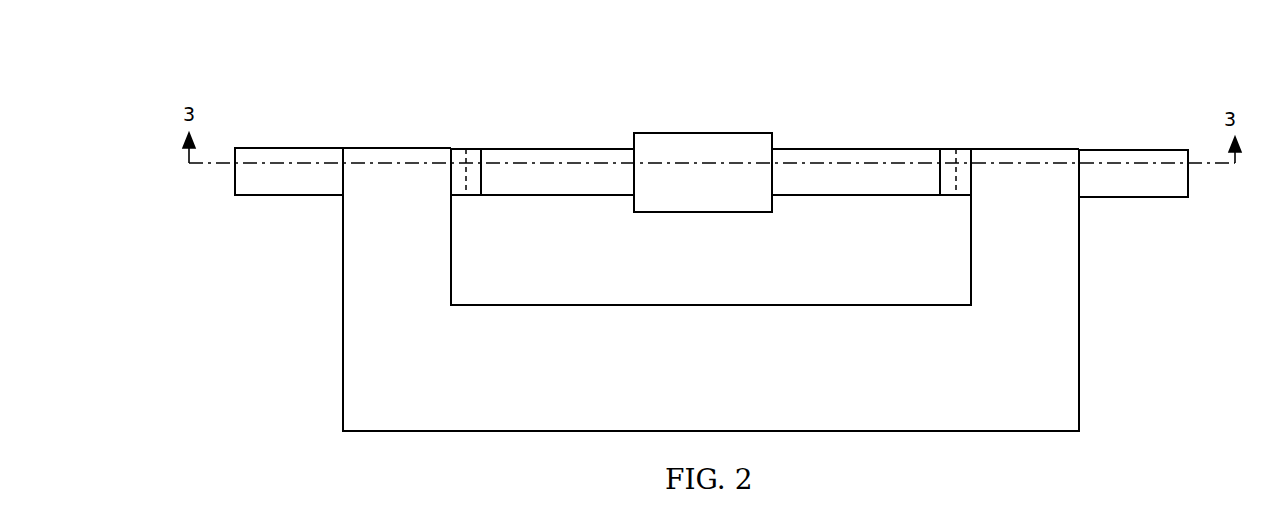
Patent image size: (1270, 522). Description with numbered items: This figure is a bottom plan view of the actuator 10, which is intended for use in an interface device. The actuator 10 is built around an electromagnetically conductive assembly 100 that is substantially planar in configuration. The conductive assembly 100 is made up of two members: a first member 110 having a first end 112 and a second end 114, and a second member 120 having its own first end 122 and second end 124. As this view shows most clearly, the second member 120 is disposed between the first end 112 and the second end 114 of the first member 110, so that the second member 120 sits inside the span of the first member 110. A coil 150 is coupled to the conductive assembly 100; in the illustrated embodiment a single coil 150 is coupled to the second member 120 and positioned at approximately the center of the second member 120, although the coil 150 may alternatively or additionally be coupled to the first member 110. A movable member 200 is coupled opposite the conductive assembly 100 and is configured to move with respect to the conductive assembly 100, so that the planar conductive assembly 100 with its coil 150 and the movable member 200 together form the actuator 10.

The actuator 10 is at (207, 78).
The electromagnetically conductive assembly 100 is at (324, 290).
The first member 110 is at (473, 410).
The first end 112 is at (373, 148).
The second end 114 is at (1009, 150).
The second member 120 is at (809, 157).
The first end 122 is at (480, 150).
The second end 124 is at (941, 157).
The coil 150 is at (672, 147).
The movable member 200 is at (1120, 157).